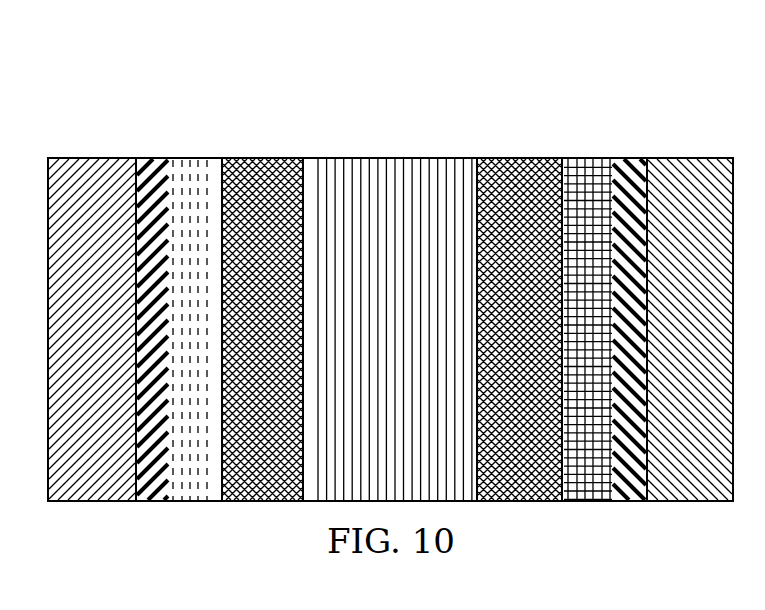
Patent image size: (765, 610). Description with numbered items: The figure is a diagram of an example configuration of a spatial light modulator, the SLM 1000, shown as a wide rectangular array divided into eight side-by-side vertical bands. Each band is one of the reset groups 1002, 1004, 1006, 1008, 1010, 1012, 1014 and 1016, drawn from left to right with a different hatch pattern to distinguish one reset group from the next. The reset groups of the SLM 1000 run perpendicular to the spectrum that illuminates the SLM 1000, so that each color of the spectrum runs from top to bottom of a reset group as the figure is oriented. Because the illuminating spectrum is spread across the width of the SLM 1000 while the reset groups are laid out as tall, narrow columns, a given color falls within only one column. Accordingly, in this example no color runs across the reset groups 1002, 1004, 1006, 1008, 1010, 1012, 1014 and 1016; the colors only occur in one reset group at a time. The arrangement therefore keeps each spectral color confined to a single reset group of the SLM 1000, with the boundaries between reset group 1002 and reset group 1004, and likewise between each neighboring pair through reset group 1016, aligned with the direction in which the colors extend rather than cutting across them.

The SLM 1000 is at (186, 69).
The reset group 1002 is at (90, 167).
The reset group 1004 is at (175, 160).
The reset group 1006 is at (263, 158).
The reset group 1008 is at (348, 162).
The reset group 1010 is at (435, 162).
The reset group 1012 is at (520, 162).
The reset group 1014 is at (605, 162).
The reset group 1016 is at (690, 162).